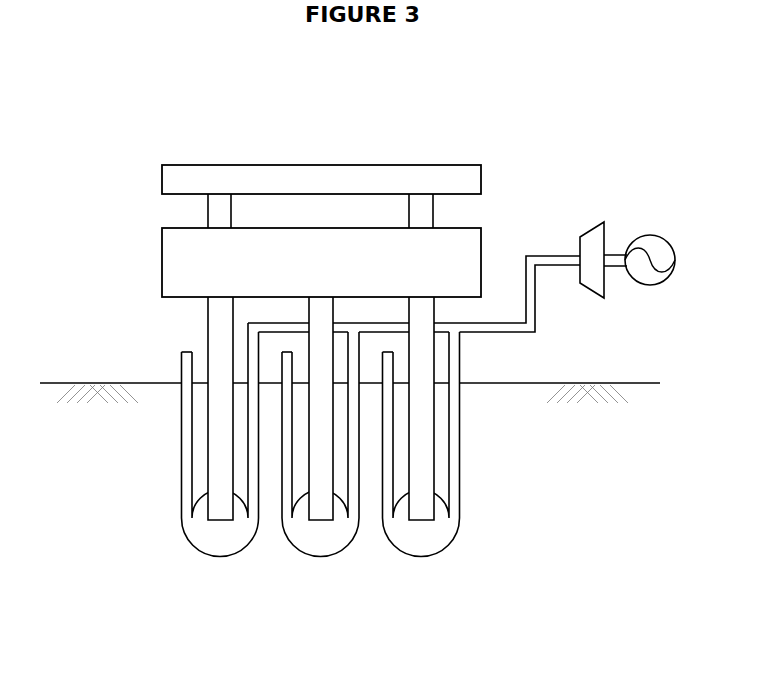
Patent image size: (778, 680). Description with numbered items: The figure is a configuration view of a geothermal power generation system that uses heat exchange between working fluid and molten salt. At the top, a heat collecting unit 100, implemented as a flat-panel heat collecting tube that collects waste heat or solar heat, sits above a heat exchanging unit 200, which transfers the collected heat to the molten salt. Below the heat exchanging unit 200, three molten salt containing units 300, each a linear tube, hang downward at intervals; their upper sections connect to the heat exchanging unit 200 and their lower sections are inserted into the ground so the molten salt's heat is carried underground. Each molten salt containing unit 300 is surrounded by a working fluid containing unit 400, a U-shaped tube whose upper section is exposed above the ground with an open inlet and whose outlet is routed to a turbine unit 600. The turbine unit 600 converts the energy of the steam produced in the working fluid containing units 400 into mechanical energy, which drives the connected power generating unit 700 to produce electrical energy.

The heat collecting unit 100 is at (326, 165).
The heat exchanging unit 200 is at (162, 259).
The molten salt containing unit 300 is at (223, 513).
The working fluid containing unit 400 is at (183, 530).
The turbine unit 600 is at (593, 238).
The power generating unit 700 is at (650, 242).